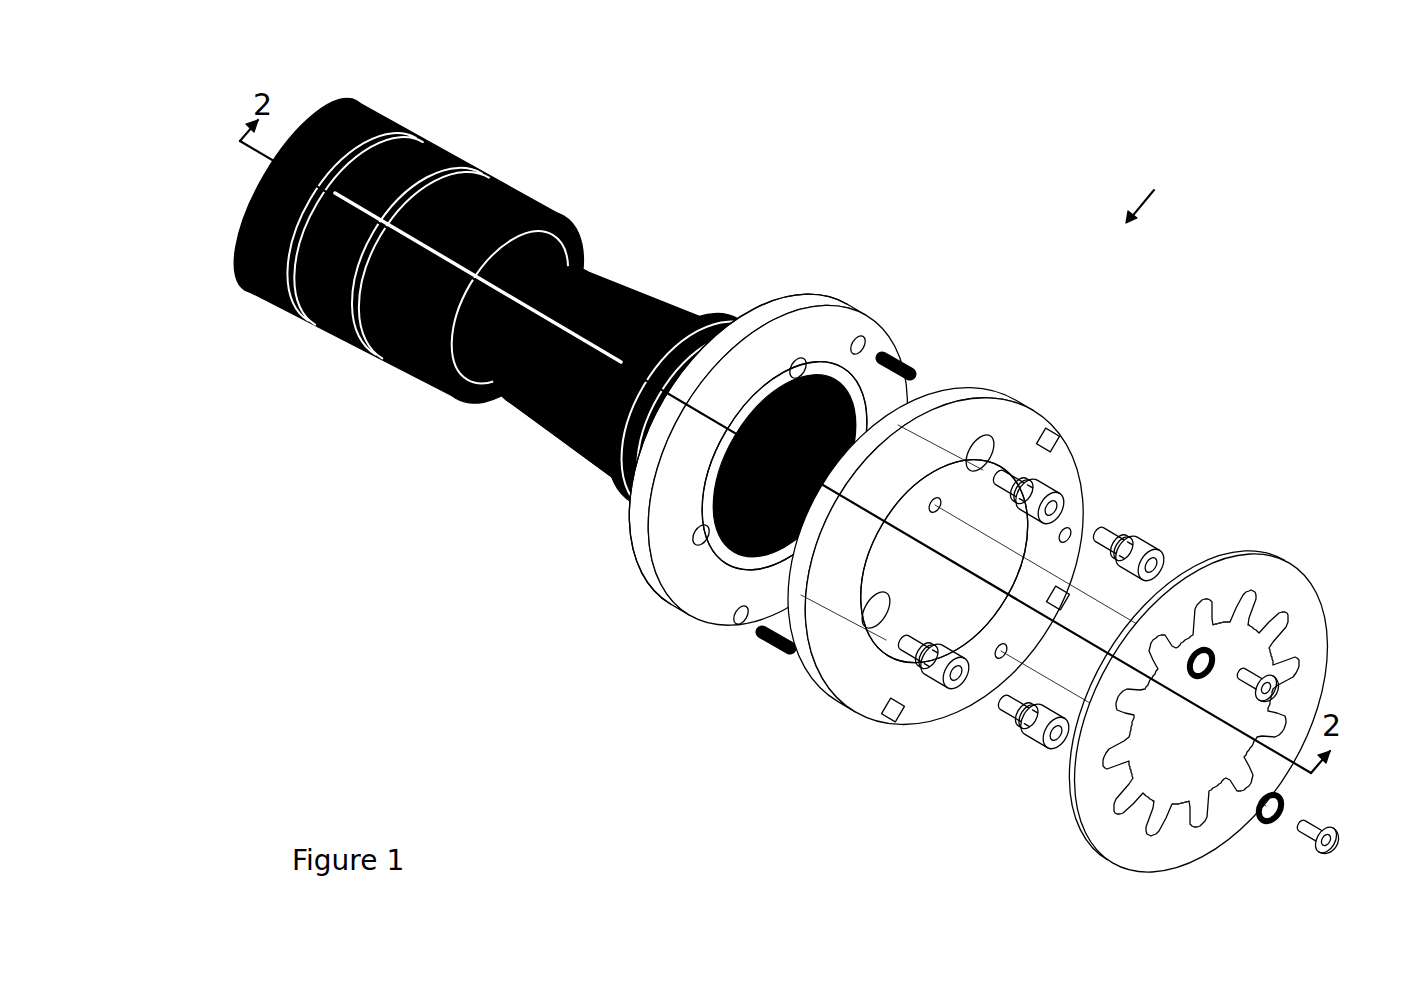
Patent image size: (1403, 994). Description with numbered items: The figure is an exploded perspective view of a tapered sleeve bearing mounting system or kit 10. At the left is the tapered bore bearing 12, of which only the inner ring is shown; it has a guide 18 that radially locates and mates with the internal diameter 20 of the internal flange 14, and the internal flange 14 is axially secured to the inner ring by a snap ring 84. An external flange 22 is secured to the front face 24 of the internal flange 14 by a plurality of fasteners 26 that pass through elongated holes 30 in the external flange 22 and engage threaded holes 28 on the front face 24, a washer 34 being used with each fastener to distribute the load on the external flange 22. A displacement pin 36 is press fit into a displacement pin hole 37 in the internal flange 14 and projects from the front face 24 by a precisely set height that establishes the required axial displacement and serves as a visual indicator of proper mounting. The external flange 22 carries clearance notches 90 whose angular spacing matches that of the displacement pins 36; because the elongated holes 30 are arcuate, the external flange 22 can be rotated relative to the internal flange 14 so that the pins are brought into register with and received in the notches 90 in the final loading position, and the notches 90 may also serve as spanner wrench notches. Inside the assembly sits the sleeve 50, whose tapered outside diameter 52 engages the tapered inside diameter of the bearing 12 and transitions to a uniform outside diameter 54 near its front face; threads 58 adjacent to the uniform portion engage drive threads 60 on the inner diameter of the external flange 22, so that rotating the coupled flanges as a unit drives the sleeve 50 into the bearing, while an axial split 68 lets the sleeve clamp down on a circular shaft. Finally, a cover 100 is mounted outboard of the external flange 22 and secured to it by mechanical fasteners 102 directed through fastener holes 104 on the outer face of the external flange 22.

The bearing system or kit 10 is at (1153, 189).
The tapered bore bearing 12 is at (393, 122).
The internal flange 14 is at (862, 320).
The guide 18 is at (557, 213).
The internal diameter 20 is at (765, 568).
The external flange 22 is at (1055, 428).
The front face 24 is at (700, 583).
The fasteners 26 is at (1135, 528).
The threaded holes 28 is at (790, 355).
The elongated holes 30 is at (965, 438).
The washer 34 is at (1012, 468).
The displacement pin 36 is at (904, 358).
The displacement pin hole 37 is at (848, 334).
The sleeve 50 is at (545, 440).
The tapered outside diameter 52 is at (522, 420).
The uniform outside diameter 54 is at (620, 468).
The threads 58 is at (715, 358).
The drive threads 60 is at (990, 598).
The axial split 68 is at (636, 442).
The snap ring 84 is at (737, 323).
The clearance notches 90 is at (1045, 428).
The cover 100 is at (1225, 555).
The mechanical fasteners 102 is at (1258, 680).
The fastener holes 104 is at (925, 495).